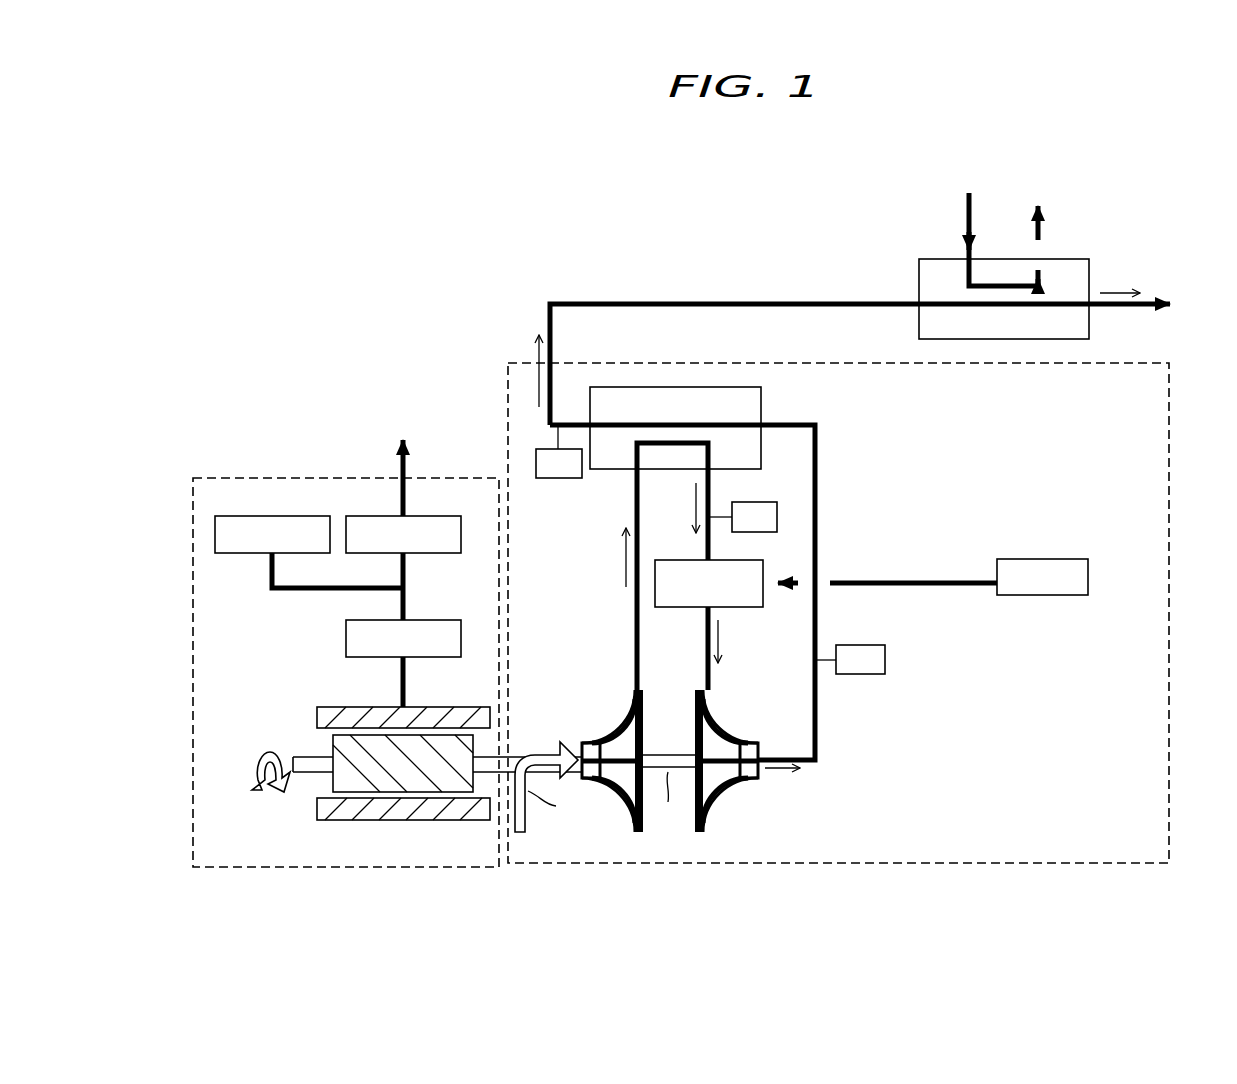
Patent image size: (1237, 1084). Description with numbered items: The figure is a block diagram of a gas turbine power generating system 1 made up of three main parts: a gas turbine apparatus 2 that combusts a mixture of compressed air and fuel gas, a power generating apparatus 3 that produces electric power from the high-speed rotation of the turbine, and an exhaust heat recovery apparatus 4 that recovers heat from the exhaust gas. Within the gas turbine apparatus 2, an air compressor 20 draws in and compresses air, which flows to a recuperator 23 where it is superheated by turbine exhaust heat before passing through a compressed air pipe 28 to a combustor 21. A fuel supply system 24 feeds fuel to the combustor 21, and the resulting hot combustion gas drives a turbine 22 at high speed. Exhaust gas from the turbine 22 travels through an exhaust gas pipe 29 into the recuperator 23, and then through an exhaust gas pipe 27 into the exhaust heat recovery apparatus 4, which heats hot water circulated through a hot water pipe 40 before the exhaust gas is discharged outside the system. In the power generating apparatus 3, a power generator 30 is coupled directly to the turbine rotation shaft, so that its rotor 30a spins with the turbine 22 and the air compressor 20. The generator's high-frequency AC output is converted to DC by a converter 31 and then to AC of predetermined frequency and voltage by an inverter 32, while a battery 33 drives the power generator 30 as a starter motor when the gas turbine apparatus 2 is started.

The gas turbine power generating system 1 is at (430, 264).
The gas turbine apparatus 2 is at (1128, 363).
The power generating apparatus 3 is at (249, 478).
The exhaust heat recovery apparatus 4 is at (919, 274).
The air compressor 20 is at (622, 718).
The combustor 21 is at (680, 607).
The turbine 22 is at (724, 790).
The recuperator (heat exchanger) 23 is at (762, 400).
The fuel supply system 24 is at (1040, 598).
The exhaust gas pipe 27 is at (556, 388).
The compressed air pipe 28 is at (708, 532).
The exhaust gas pipe 29 is at (818, 748).
The power generator 30 is at (405, 811).
The rotor 30a is at (333, 778).
The converter 31 is at (346, 637).
The inverter 32 is at (437, 553).
The battery 33 is at (240, 553).
The hot water pipe 40 is at (965, 212).